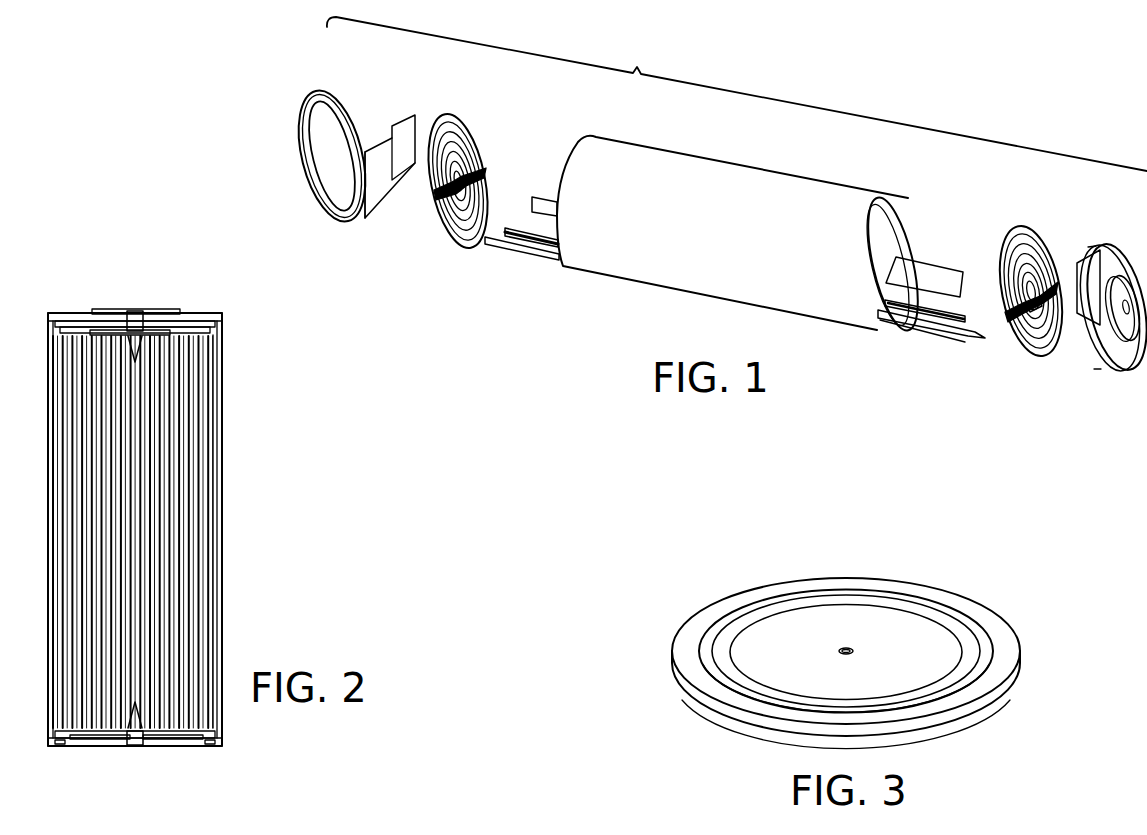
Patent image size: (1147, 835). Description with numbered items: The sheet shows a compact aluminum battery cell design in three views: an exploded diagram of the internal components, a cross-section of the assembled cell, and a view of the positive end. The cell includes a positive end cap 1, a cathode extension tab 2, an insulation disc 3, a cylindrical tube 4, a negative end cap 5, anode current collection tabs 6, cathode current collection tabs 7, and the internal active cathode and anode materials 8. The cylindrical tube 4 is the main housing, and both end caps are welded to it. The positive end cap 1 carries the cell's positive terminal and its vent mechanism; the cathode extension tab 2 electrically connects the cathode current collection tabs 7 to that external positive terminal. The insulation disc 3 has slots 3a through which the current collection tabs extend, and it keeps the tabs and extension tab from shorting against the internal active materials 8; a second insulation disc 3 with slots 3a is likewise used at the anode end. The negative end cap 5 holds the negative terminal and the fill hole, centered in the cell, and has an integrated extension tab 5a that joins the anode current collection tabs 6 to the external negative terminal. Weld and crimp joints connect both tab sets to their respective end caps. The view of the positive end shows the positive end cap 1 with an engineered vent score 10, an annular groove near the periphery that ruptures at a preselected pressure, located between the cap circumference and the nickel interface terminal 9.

In FIG. 1, the positive end cap 1 is at (340, 89).
In FIG. 2, the positive end cap 1 is at (88, 748).
In FIG. 3, the positive end cap 1 is at (731, 597).
In FIG. 1, the cathode extension tab 2 is at (402, 122).
In FIG. 1, the insulation disc 3 is at (468, 113).
In FIG. 1, the slots 3a is at (476, 162).
In FIG. 1, the cylindrical tube 4 is at (734, 166).
In FIG. 2, the cylindrical tube 4 is at (224, 600).
In FIG. 1, the negative end cap 5 is at (1127, 243).
In FIG. 2, the negative end cap 5 is at (200, 313).
In FIG. 1, the integrated extension tab 5a is at (1085, 320).
In FIG. 1, the anode current collection tabs 6 is at (915, 330).
In FIG. 2, the anode current collection tabs 6 is at (100, 333).
In FIG. 1, the cathode current collection tabs 7 is at (525, 262).
In FIG. 2, the cathode current collection tabs 7 is at (160, 748).
In FIG. 1, the internal active cathode and anode materials 8 is at (908, 228).
In FIG. 2, the internal active cathode and anode materials 8 is at (205, 488).
In FIG. 3, the nickel interface terminal 9 is at (878, 606).
In FIG. 3, the engineered vent score 10 is at (714, 685).